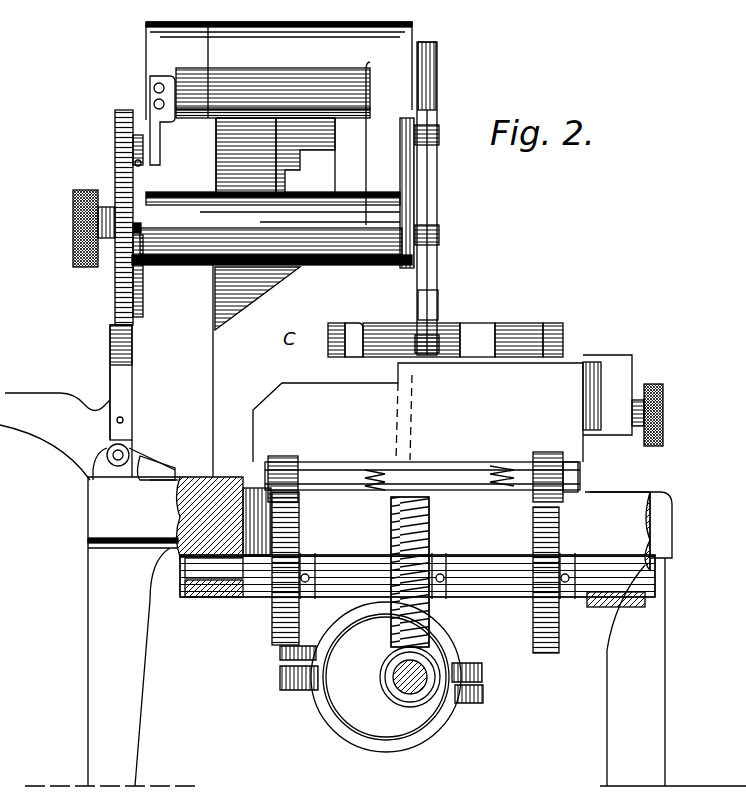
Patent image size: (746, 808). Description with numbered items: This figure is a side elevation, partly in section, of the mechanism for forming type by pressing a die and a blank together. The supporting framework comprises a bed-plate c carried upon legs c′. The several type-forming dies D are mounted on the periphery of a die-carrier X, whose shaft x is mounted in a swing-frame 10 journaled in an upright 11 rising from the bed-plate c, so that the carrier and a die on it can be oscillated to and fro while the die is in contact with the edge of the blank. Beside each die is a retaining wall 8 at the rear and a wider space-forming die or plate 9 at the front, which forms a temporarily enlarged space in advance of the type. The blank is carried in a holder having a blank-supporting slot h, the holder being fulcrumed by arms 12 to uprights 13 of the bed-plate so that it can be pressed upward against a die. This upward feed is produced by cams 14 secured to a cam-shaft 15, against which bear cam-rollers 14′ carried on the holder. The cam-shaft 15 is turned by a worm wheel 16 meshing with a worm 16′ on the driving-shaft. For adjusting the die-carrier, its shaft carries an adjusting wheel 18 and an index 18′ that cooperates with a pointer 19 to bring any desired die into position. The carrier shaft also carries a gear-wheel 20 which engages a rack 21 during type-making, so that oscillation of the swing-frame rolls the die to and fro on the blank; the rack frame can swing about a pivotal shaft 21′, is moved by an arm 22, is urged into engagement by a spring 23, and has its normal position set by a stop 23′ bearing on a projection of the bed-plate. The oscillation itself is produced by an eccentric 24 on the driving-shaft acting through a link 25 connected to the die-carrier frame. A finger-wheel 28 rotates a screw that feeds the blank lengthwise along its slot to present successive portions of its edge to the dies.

The retaining wall 8 is at (437, 160).
The space-forming die 9 is at (425, 160).
The swing-frame 10 is at (287, 212).
The upright 11 is at (235, 350).
The arms 12 is at (355, 352).
The uprights 13 is at (546, 332).
The cams 14 is at (299, 620).
The cam-rollers 14′ is at (285, 468).
The cam-shaft 15 is at (488, 582).
The worm wheel 16 is at (430, 535).
The worm 16′ is at (438, 664).
The adjusting wheel 18 is at (134, 296).
The index 18′ is at (160, 150).
The pointer 19 is at (146, 163).
The gear-wheel 20 is at (118, 292).
The rack 21 is at (133, 330).
The pivotal shaft 21′ is at (126, 446).
The arm 22 is at (60, 393).
The spring 23 is at (106, 455).
The stop 23′ is at (162, 470).
The eccentric 24 is at (335, 678).
The link 25 is at (440, 302).
The finger-wheel 28 is at (652, 400).
The type-forming die D is at (452, 198).
The die-carrier X is at (455, 269).
The shaft x is at (440, 246).
The bed-plate c is at (664, 526).
The legs c′ is at (132, 695).
The blank-supporting slot h is at (563, 365).